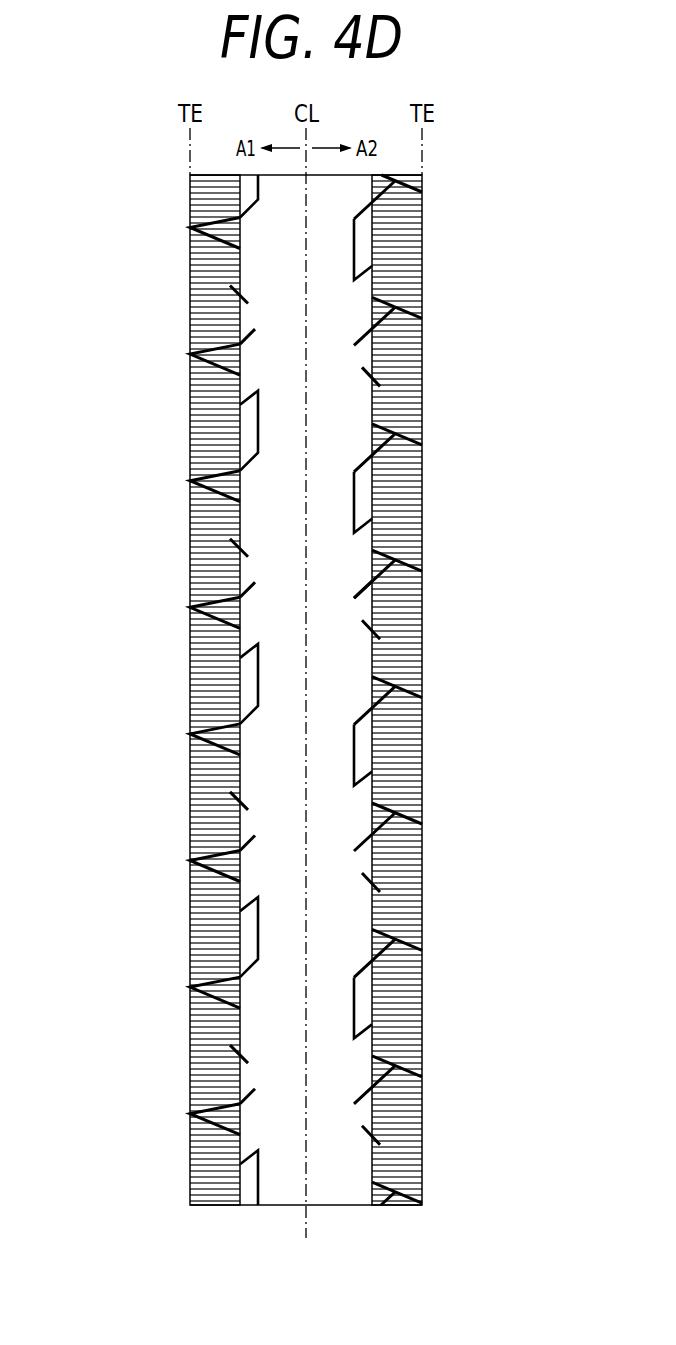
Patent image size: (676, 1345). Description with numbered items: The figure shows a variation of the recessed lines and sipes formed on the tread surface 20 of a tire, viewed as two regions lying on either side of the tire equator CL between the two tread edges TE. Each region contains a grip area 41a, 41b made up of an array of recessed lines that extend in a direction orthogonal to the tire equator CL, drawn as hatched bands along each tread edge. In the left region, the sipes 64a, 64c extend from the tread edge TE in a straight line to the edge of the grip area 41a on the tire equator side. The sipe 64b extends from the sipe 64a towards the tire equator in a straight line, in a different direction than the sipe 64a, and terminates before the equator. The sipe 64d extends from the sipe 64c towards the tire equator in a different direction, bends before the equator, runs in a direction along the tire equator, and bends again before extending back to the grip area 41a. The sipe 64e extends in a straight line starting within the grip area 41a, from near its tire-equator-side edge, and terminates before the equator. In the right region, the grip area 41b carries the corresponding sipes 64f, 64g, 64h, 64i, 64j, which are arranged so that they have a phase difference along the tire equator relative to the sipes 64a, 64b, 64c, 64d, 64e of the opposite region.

The tread surface 20 is at (309, 690).
The grip area 41a is at (208, 304).
The grip area 41b is at (406, 383).
The sipe 64a is at (190, 358).
The sipe 64b is at (252, 338).
The sipe 64c is at (191, 480).
The sipe 64d is at (255, 458).
The sipe 64e is at (245, 556).
The sipe 64f is at (424, 540).
The sipe 64g is at (360, 589).
The sipe 64h is at (425, 694).
The sipe 64i is at (360, 713).
The sipe 64j is at (379, 610).